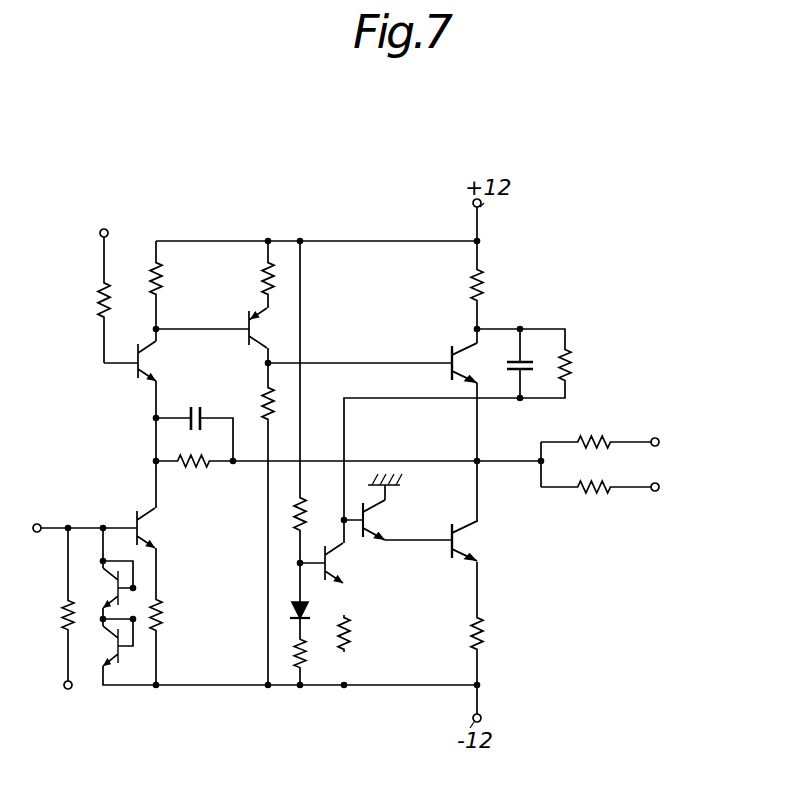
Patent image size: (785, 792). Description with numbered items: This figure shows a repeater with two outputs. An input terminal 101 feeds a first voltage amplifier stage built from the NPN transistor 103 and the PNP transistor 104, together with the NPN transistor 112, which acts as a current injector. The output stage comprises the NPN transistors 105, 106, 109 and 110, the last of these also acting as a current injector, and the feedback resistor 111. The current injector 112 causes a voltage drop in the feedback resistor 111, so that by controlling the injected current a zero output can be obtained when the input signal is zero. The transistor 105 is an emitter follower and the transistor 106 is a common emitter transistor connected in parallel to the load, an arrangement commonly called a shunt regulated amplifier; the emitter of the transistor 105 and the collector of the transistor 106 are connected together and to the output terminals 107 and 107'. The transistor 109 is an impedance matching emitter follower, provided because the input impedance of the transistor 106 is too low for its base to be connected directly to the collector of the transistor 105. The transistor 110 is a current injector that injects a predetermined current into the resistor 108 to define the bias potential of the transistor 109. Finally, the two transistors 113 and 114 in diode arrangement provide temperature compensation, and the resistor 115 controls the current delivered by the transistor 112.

The input terminal 101 is at (111, 226).
The NPN transistor 103 is at (143, 364).
The PNP transistor 104 is at (252, 331).
The emitter follower transistor 105 is at (456, 366).
The common emitter transistor 106 is at (456, 544).
The output terminal 107 is at (637, 442).
The output terminal 107' is at (641, 489).
The resistor 108 is at (567, 368).
The impedance matching emitter follower transistor 109 is at (367, 523).
The current injector 110 is at (329, 566).
The feedback resistor 111 is at (180, 469).
The current injector 112 is at (141, 531).
The transistor in diode arrangement 113 is at (113, 589).
The transistor in diode arrangement 114 is at (113, 644).
The resistor 115 is at (64, 617).